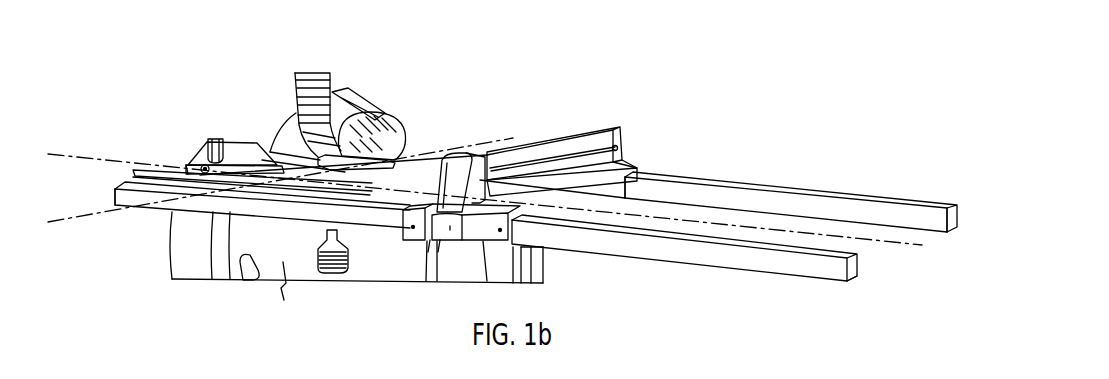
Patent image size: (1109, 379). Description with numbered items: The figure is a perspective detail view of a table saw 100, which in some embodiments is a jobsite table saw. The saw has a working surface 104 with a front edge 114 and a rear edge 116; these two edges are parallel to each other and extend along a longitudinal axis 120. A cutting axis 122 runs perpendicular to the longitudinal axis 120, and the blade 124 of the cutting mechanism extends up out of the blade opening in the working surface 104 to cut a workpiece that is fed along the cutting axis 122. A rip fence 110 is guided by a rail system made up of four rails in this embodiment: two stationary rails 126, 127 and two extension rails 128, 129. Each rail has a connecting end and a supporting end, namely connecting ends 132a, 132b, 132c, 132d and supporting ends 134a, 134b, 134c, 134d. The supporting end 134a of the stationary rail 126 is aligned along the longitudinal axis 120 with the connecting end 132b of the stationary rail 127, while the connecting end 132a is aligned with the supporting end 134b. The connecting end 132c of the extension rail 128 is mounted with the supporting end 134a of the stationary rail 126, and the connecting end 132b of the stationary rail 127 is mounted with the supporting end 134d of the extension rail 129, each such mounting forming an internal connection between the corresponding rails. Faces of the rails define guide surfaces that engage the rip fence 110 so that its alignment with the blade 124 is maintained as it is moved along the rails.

The table saw 100 is at (143, 306).
The working surface 104 is at (280, 147).
The rip fence 110 is at (560, 127).
The front edge 114 is at (143, 168).
The rear edge 116 is at (298, 147).
The longitudinal axis 120 is at (122, 160).
The cutting axis 122 is at (77, 221).
The blade 124 is at (318, 105).
The stationary rail 126 is at (172, 213).
The stationary rail 127 is at (460, 134).
The extension rail 128 is at (648, 263).
The extension rail 129 is at (850, 196).
The connecting end 132a is at (104, 194).
The connecting end 132b is at (638, 160).
The connecting end 132c is at (540, 263).
The connecting end 132d is at (938, 190).
The supporting end 134a is at (485, 250).
The supporting end 134b is at (172, 137).
The supporting end 134c is at (843, 297).
The supporting end 134d is at (670, 166).